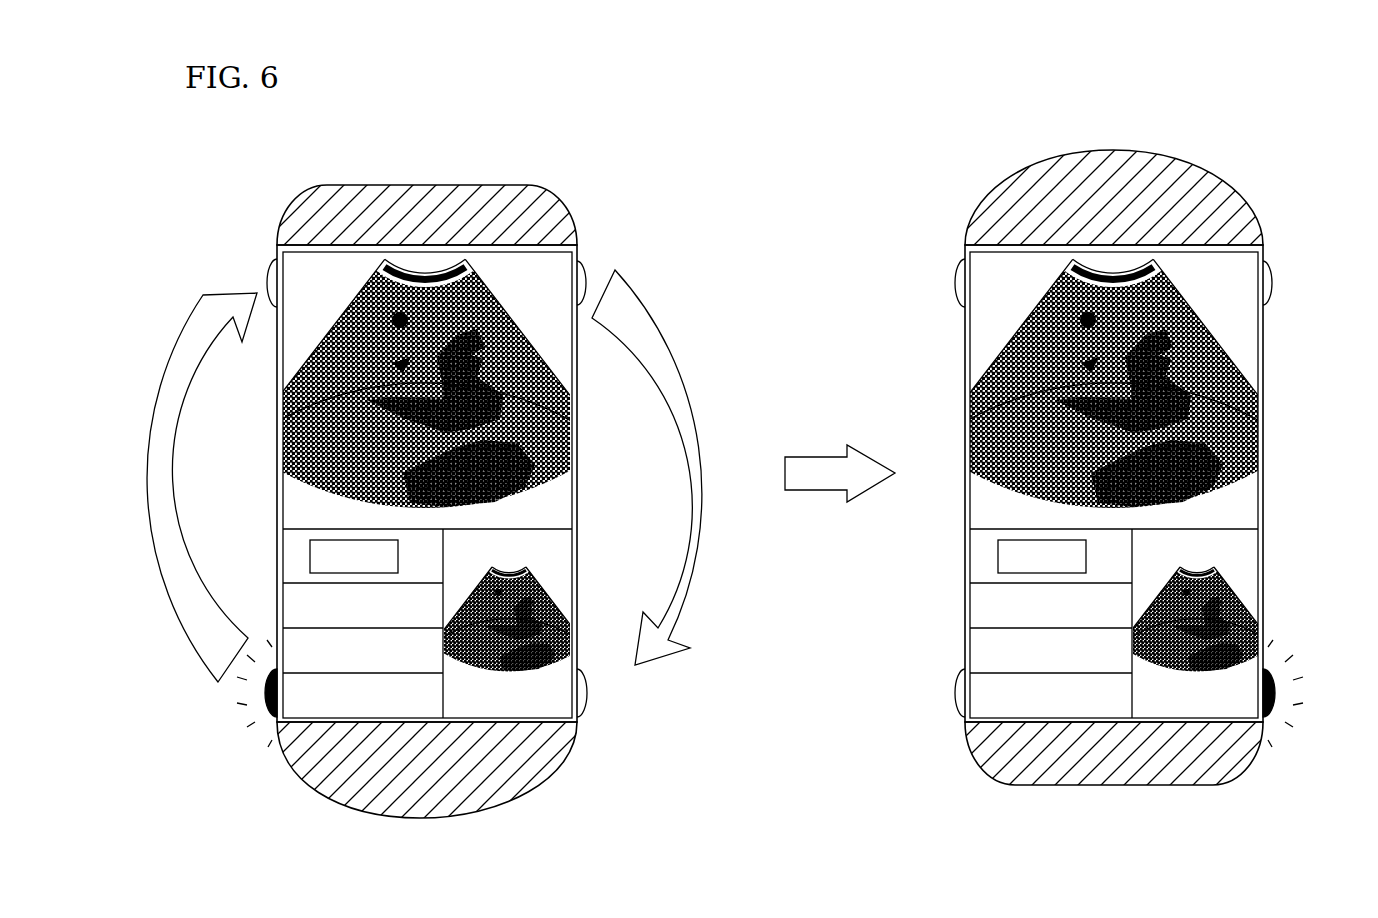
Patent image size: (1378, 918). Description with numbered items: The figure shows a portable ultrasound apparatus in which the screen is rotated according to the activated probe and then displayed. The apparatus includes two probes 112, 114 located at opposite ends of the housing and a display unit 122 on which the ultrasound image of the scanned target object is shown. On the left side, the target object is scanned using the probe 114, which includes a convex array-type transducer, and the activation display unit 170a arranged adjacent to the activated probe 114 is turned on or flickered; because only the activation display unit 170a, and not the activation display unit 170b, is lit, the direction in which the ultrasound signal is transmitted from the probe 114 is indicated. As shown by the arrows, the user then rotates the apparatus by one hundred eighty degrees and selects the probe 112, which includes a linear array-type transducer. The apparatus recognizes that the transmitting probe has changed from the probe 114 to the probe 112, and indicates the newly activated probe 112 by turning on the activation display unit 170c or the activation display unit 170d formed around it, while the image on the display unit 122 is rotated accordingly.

The probe 112 is at (460, 183).
The probe 114 is at (482, 792).
The display unit 122 is at (297, 505).
The activation display unit 170a is at (266, 700).
The activation display unit 170b is at (585, 700).
The activation display unit 170c is at (268, 278).
The activation display unit 170d is at (583, 270).